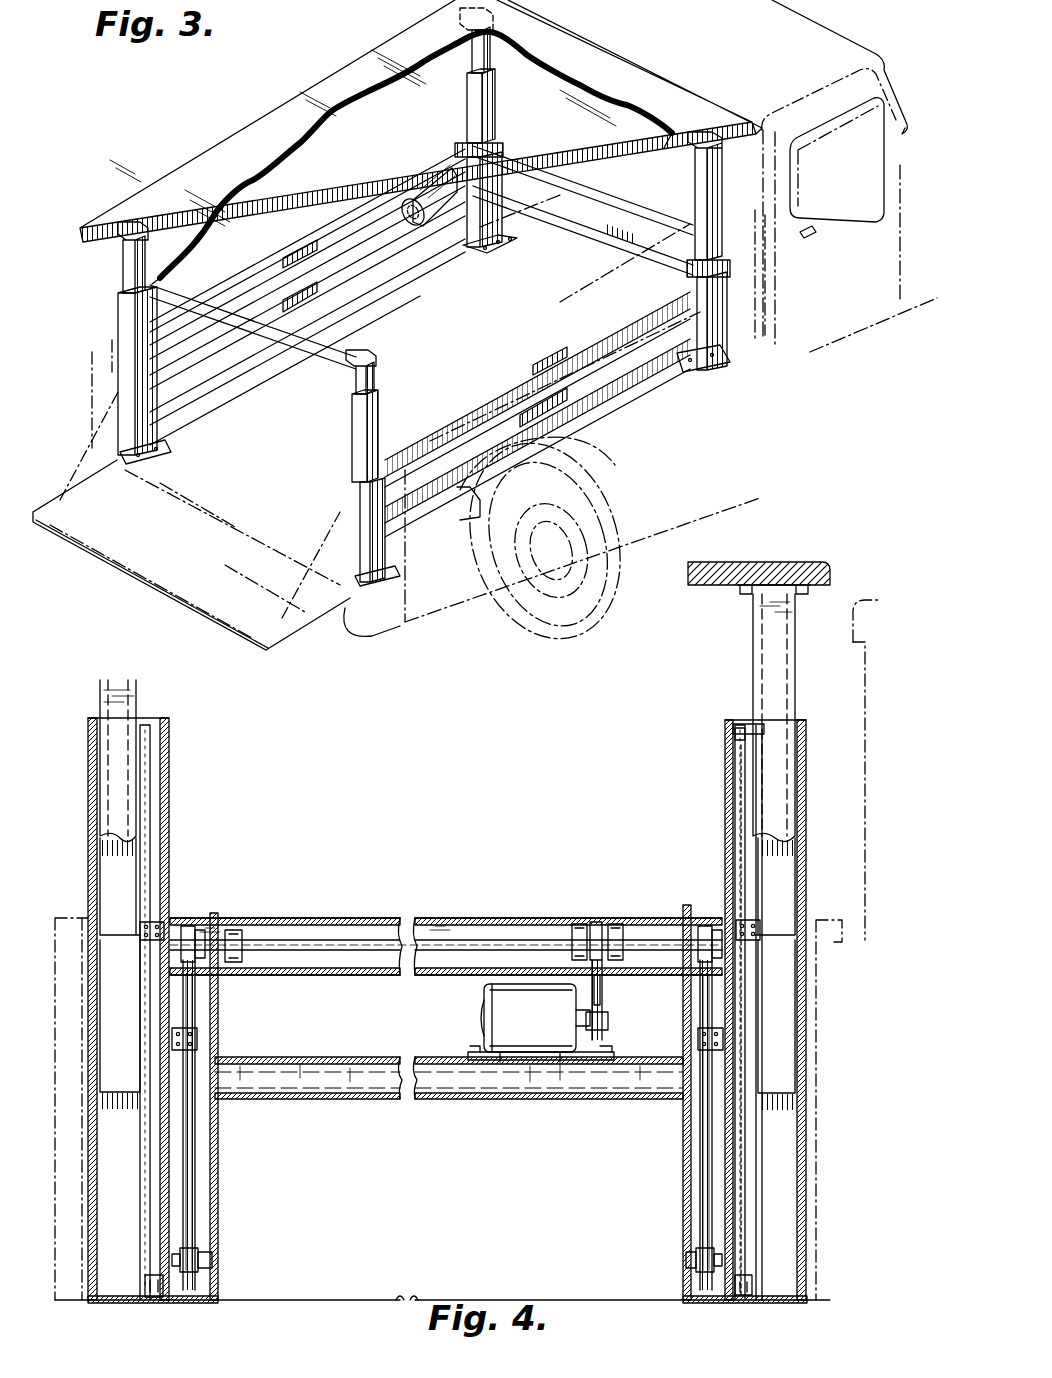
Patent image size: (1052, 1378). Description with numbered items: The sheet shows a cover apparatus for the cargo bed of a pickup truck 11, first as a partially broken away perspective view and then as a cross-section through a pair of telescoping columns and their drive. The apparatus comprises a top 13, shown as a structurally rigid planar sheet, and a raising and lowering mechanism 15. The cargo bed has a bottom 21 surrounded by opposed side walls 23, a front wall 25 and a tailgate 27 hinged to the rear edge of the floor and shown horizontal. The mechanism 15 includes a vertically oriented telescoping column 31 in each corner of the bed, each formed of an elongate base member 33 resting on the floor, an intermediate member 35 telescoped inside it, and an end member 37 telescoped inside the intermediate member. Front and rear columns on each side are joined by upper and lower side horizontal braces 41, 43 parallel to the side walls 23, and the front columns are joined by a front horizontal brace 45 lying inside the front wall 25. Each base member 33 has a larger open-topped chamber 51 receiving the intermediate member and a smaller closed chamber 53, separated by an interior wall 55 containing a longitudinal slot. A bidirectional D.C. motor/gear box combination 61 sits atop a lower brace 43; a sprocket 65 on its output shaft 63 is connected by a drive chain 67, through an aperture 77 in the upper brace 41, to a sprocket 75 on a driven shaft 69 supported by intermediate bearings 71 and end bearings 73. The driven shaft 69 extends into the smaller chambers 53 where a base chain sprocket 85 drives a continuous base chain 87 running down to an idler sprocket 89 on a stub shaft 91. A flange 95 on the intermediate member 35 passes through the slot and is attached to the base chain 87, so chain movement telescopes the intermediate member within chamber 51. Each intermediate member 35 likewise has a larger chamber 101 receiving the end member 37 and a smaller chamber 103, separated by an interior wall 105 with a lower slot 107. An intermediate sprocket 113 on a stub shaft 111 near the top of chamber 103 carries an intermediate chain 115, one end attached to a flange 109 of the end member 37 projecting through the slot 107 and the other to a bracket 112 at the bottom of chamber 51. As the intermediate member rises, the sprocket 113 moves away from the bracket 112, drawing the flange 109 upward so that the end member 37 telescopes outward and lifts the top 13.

In FIG. 3, the pickup truck 11 is at (806, 370).
In FIG. 4, the pickup truck 11 is at (898, 592).
In FIG. 3, the top 13 is at (220, 155).
In FIG. 4, the top 13 is at (778, 574).
In FIG. 3, the raising and lowering mechanism 15 is at (622, 258).
In FIG. 3, the bottom 21 is at (232, 466).
In FIG. 4, the bottom 21 is at (326, 1298).
In FIG. 3, the side walls 23 is at (96, 364).
In FIG. 3, the front wall 25 is at (748, 262).
In FIG. 4, the front wall 25 is at (845, 926).
In FIG. 3, the tailgate 27 is at (126, 550).
In FIG. 4, the tailgate 27 is at (60, 1140).
In FIG. 3, the telescoping column 31 is at (478, 252).
In FIG. 3, the base member 33 is at (494, 205).
In FIG. 4, the base member 33 is at (220, 1216).
In FIG. 3, the intermediate member 35 is at (118, 318).
In FIG. 4, the intermediate member 35 is at (170, 812).
In FIG. 3, the end member 37 is at (122, 265).
In FIG. 4, the end member 37 is at (128, 690).
In FIG. 3, the side horizontal brace 41 is at (340, 222).
In FIG. 4, the side horizontal brace 41 is at (336, 916).
In FIG. 3, the side horizontal brace 43 is at (280, 307).
In FIG. 4, the side horizontal brace 43 is at (345, 1088).
In FIG. 3, the front horizontal brace 45 is at (552, 190).
In FIG. 4, the larger chamber 51 is at (108, 1184).
In FIG. 4, the smaller chamber 53 is at (200, 1188).
In FIG. 4, the interior wall 55 is at (178, 1292).
In FIG. 3, the motor/gear box combination 61 is at (412, 192).
In FIG. 4, the motor/gear box combination 61 is at (492, 1012).
In FIG. 4, the output shaft 63 is at (578, 1060).
In FIG. 4, the sprocket 65 is at (600, 1034).
In FIG. 4, the drive chain 67 is at (598, 1010).
In FIG. 4, the driven shaft 69 is at (470, 946).
In FIG. 4, the intermediate bearings 71 is at (242, 940).
In FIG. 4, the end bearings 73 is at (176, 922).
In FIG. 4, the sprocket 75 is at (592, 930).
In FIG. 4, the aperture 77 is at (602, 988).
In FIG. 4, the base chain sprocket 85 is at (196, 932).
In FIG. 4, the base chain 87 is at (196, 1150).
In FIG. 4, the idler sprocket 89 is at (198, 1250).
In FIG. 4, the stub shaft 91 is at (204, 1280).
In FIG. 4, the flange 95 is at (198, 1036).
In FIG. 4, the larger chamber 101 is at (112, 866).
In FIG. 4, the smaller chamber 103 is at (152, 724).
In FIG. 4, the interior wall 105 is at (764, 762).
In FIG. 4, the slot 107 is at (140, 1050).
In FIG. 4, the flange 109 is at (142, 936).
In FIG. 4, the stub shaft 111 is at (758, 722).
In FIG. 4, the bracket 112 is at (146, 1286).
In FIG. 4, the intermediate sprocket 113 is at (735, 734).
In FIG. 4, the intermediate chain 115 is at (738, 806).